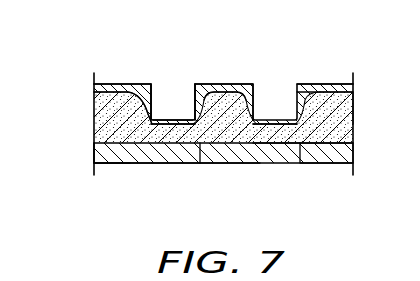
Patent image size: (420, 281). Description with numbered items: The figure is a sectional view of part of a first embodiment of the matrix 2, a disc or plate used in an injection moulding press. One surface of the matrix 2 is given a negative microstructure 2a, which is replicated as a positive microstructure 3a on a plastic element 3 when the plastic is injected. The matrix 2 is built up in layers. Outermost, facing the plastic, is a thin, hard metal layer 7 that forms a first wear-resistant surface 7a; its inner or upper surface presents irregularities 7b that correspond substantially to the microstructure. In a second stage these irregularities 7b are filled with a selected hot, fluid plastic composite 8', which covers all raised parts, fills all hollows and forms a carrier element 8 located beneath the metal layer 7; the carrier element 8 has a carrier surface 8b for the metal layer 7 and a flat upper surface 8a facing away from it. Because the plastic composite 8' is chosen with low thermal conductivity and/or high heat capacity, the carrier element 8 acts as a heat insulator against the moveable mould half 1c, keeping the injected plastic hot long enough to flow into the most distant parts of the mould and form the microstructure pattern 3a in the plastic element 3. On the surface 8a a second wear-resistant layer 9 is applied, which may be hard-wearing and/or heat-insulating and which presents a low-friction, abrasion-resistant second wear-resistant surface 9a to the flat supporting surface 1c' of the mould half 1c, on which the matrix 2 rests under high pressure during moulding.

The matrix 2 is at (272, 82).
The negative microstructure 2a is at (108, 73).
The plastic element 3 is at (173, 58).
The positive microstructure 3a is at (183, 111).
The thin metal layer 7 is at (225, 92).
The first wear-resistant surface 7a is at (200, 86).
The irregularities 7b is at (326, 127).
The carrier element 8 is at (356, 102).
The plastic composite 8' is at (106, 108).
The flat upper surface 8a is at (272, 146).
The carrier surface 8b is at (313, 97).
The second wear-resistant layer 9 is at (150, 154).
The second wear-resistant surface 9a is at (107, 167).
The moveable mould half 1c is at (230, 168).
The flat supporting surface 1c' is at (342, 172).